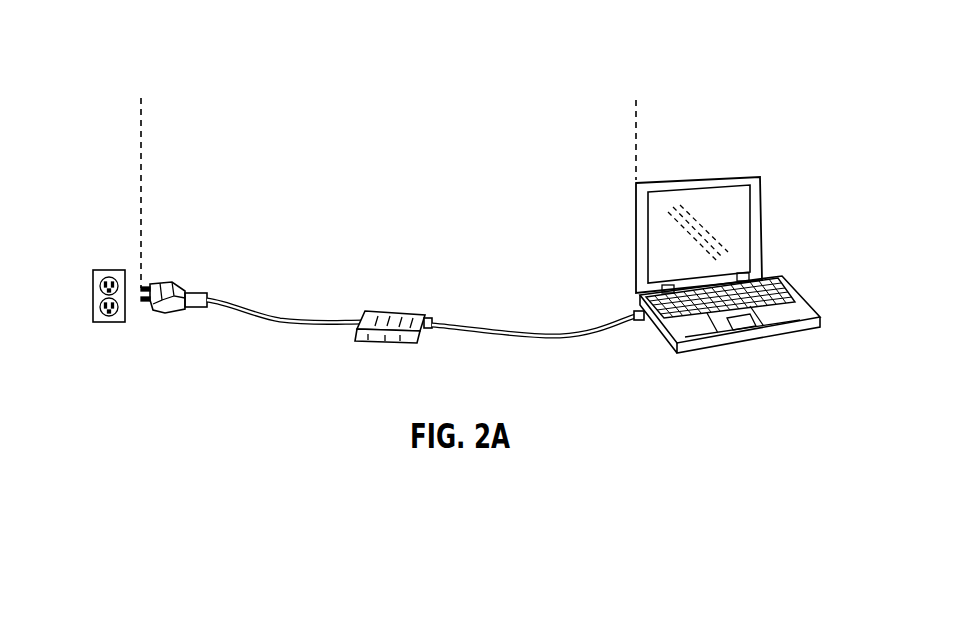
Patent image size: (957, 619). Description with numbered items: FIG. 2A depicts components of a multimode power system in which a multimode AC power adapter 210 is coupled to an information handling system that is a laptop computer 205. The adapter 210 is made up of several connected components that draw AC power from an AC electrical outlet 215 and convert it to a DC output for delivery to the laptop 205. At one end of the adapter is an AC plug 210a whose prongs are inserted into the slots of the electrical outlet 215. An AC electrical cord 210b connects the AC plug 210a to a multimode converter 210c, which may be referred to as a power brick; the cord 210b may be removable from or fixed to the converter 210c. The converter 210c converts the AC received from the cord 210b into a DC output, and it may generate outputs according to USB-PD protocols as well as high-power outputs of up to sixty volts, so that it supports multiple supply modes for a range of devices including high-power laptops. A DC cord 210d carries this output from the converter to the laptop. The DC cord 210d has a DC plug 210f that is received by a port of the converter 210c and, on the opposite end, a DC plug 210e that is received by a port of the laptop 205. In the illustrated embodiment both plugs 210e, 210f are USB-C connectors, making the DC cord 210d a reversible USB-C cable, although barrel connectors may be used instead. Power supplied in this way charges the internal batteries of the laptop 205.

The laptop computer 205 is at (770, 283).
The multimode AC power adapter 210 is at (636, 98).
The AC plug 210a is at (156, 284).
The AC electrical cord 210b is at (213, 297).
The multimode converter 210c is at (378, 312).
The DC cord 210d is at (540, 332).
The DC plug 210e is at (641, 323).
The DC plug 210f is at (430, 318).
The AC electrical outlet 215 is at (110, 323).